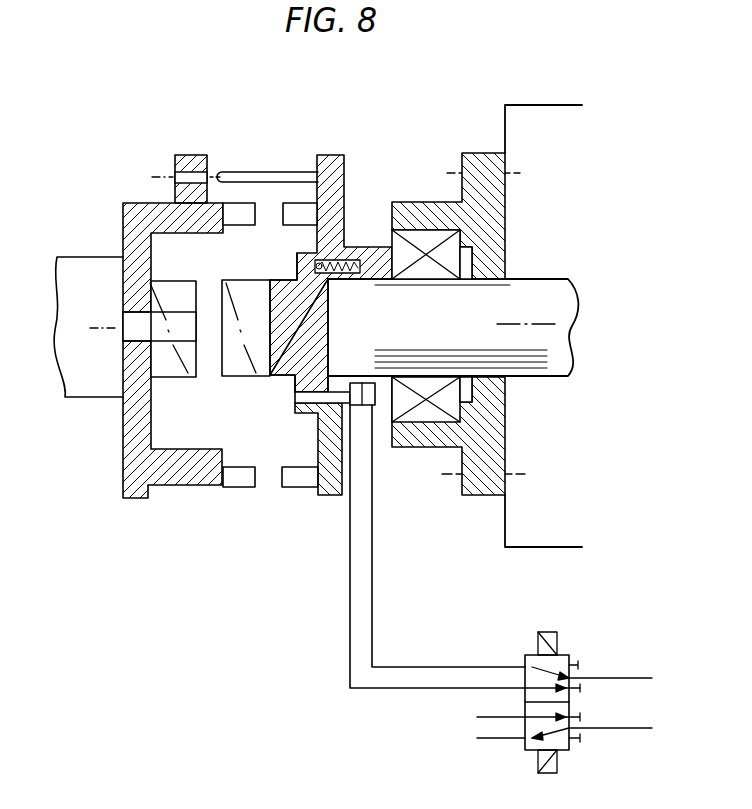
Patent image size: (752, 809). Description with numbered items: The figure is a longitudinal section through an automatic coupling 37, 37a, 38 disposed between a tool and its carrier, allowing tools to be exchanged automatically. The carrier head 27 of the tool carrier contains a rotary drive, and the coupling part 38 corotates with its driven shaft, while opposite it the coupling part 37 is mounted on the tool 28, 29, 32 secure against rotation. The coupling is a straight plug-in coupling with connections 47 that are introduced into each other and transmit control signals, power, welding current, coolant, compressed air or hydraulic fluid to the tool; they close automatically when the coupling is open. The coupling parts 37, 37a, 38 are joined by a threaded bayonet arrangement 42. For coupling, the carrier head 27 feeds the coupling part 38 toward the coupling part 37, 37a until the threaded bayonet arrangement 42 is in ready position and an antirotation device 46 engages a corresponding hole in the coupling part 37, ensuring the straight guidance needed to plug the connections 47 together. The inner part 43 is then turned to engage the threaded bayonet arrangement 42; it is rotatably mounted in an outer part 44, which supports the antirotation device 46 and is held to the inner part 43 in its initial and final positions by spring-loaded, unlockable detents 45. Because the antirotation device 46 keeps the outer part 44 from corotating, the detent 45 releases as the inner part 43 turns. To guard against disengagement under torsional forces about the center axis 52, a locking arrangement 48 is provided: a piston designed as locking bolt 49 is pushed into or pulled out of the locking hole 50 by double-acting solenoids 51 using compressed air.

The carrier head 27 is at (542, 133).
The tool 28 is at (65, 311).
The tool 29 is at (88, 327).
The tool 32 is at (90, 277).
The coupling part 37 is at (161, 152).
The coupling part 37a is at (168, 151).
The coupling part 38 is at (388, 298).
The threaded bayonet arrangement 42 is at (223, 378).
The inner part 43 is at (282, 374).
The outer part 44 is at (324, 260).
The spring-loaded, unlockable detent 45 is at (314, 263).
The antirotation device 46 is at (254, 156).
The connections 47 is at (230, 212).
The locking arrangement 48 is at (380, 434).
The locking bolt 49 is at (333, 494).
The locking hole 50 is at (313, 406).
The double-acting solenoids 51 is at (562, 742).
The center axis 52 is at (530, 322).